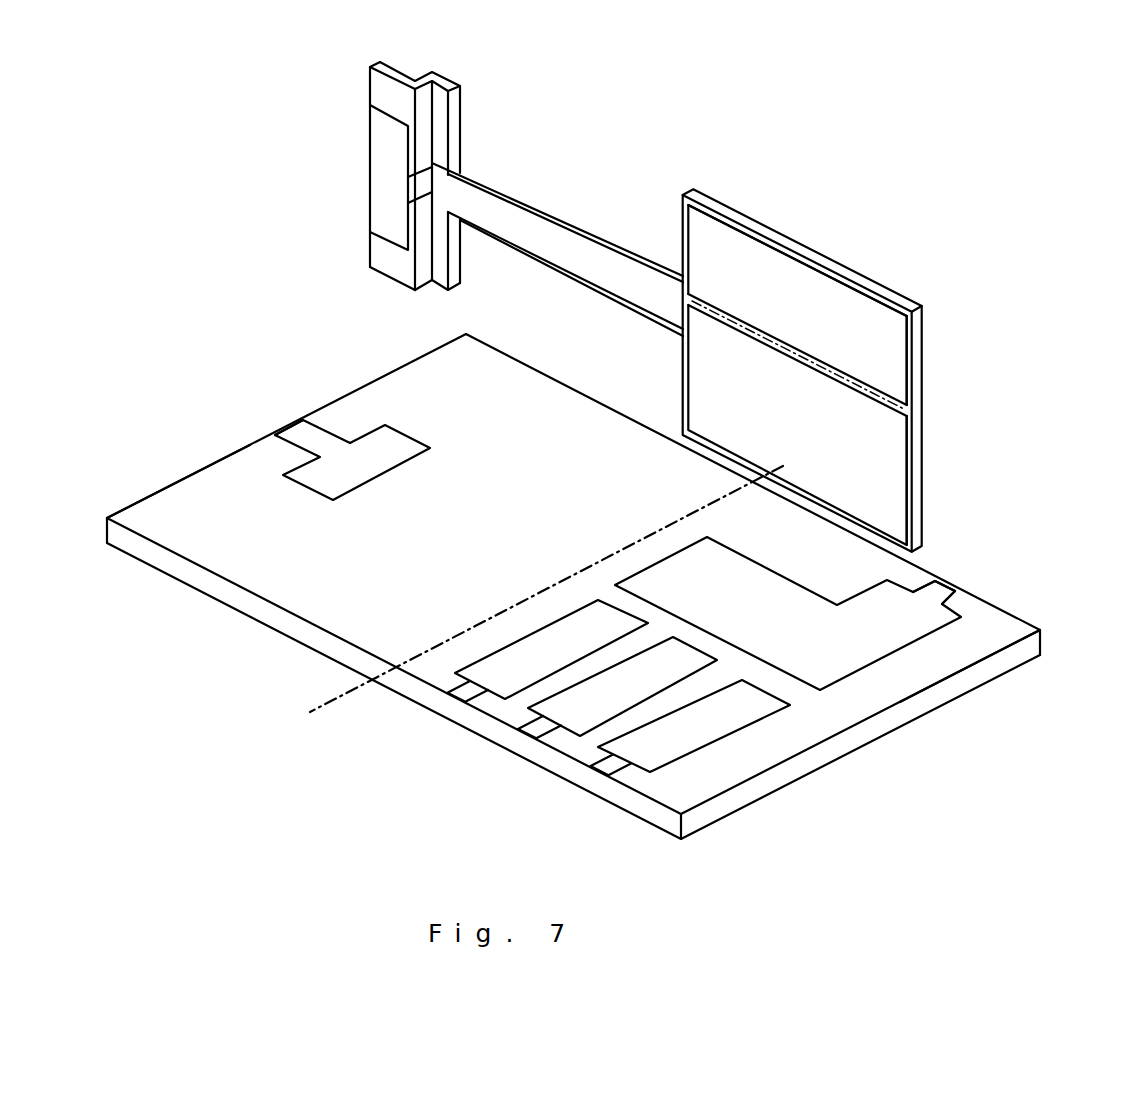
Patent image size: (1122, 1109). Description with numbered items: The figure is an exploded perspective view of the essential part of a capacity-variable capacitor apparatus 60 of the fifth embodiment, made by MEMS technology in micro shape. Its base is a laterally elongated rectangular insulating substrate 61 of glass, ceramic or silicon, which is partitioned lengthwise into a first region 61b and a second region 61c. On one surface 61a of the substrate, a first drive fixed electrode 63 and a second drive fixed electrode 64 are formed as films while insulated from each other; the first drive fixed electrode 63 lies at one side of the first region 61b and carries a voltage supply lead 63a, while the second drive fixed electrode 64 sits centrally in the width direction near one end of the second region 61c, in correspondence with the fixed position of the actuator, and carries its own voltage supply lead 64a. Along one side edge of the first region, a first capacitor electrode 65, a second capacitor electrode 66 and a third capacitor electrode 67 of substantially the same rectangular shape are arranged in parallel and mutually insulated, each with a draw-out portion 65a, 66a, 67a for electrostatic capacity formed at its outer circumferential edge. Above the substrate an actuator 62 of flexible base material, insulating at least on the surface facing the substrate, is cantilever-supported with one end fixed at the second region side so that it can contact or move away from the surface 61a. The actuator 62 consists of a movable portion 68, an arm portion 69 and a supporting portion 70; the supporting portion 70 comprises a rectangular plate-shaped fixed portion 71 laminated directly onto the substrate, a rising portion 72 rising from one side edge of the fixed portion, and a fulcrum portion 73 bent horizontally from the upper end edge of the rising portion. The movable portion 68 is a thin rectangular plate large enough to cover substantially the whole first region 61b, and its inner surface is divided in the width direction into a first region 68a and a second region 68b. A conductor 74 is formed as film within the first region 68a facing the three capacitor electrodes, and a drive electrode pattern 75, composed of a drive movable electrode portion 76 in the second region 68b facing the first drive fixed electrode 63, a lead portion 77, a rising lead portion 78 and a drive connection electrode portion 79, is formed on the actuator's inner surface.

The capacitor apparatus 60 is at (215, 327).
The insulating substrate 61 is at (348, 392).
The one surface 61a is at (185, 488).
The first region 61b is at (977, 628).
The second region 61c is at (538, 392).
The actuator 62 is at (622, 256).
The first drive fixed electrode 63 is at (838, 663).
The voltage supply lead 63a is at (936, 592).
The second drive fixed electrode 64 is at (357, 472).
The voltage supply lead 64a is at (293, 432).
The first capacitor electrode 65 is at (633, 750).
The draw-out portion 65a is at (610, 767).
The second capacitor electrode 66 is at (573, 720).
The draw-out portion 66a is at (540, 730).
The third capacitor electrode 67 is at (495, 678).
The draw-out portion 67a is at (463, 693).
The movable portion 68 is at (830, 242).
The first region 68a is at (918, 396).
The second region 68b is at (918, 453).
The arm portion 69 is at (508, 250).
The supporting portion 70 is at (292, 210).
The fixed portion 71 is at (385, 243).
The rising portion 72 is at (424, 253).
The fulcrum portion 73 is at (445, 262).
The conductor 74 is at (888, 352).
The drive electrode pattern 75 is at (703, 380).
The movable electrode portion for drive 76 is at (888, 492).
The lead portion 77 is at (553, 243).
The rising lead portion 78 is at (422, 184).
The connection electrode portion for drive 79 is at (388, 165).